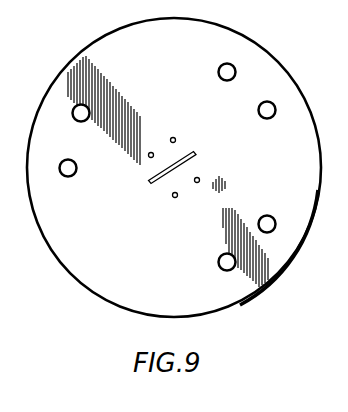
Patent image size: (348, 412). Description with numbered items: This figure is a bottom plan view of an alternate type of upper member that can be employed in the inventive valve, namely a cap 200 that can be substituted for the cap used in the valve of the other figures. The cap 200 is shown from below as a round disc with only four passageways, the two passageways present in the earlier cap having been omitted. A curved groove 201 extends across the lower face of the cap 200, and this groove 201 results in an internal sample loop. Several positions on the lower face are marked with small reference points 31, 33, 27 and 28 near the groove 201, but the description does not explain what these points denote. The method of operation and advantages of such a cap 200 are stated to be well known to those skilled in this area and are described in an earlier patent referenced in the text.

The cap 200 is at (155, 266).
The curved groove 201 is at (196, 156).
The measurement point 31 is at (174, 137).
The measurement point 33 is at (151, 152).
The measurement point 27 is at (173, 198).
The measurement point 28 is at (199, 182).